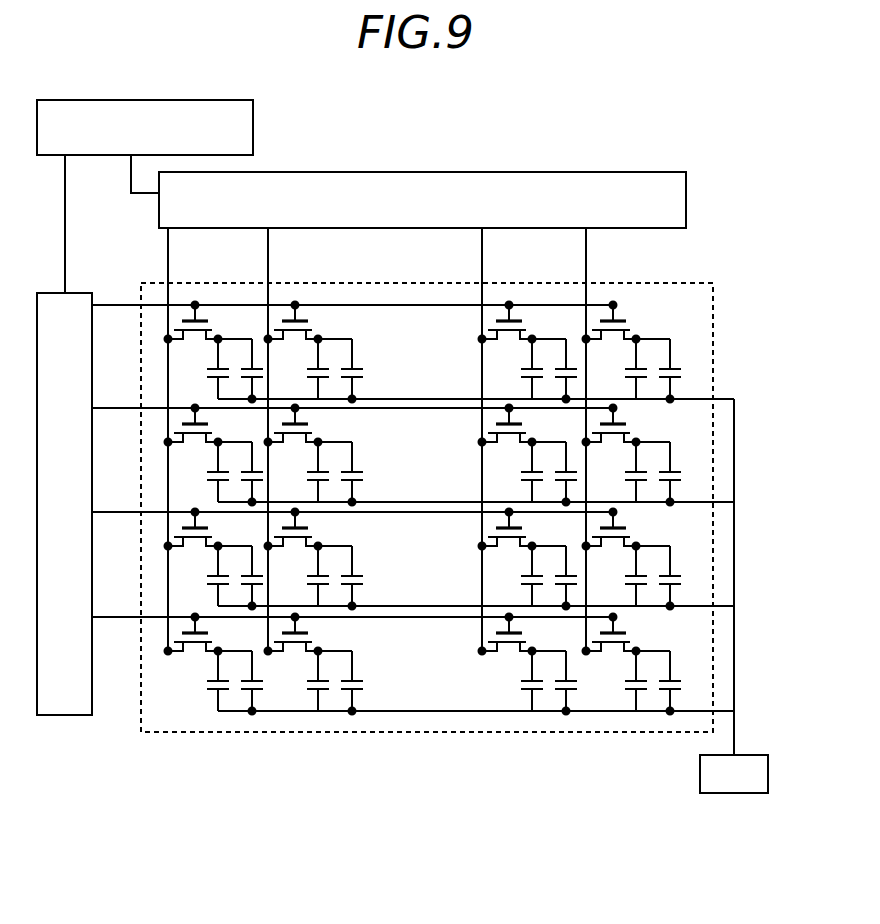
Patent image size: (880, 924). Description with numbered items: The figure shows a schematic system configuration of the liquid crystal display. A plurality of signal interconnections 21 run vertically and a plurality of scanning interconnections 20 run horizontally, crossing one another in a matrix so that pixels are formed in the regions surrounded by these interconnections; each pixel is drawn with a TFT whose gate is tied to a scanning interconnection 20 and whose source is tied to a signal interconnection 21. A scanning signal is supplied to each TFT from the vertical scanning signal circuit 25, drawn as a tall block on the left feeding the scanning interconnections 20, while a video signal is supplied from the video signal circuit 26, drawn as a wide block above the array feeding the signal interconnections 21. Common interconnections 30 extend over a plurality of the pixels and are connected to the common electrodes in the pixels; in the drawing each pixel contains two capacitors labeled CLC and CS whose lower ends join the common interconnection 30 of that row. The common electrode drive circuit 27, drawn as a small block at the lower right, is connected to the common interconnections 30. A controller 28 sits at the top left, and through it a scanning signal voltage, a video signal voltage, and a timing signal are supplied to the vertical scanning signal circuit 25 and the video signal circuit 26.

The scanning interconnections 20 is at (105, 617).
The signal interconnections 21 is at (586, 267).
The vertical scanning signal circuit 25 is at (55, 715).
The video signal circuit 26 is at (686, 197).
The common electrode drive circuit 27 is at (755, 755).
The controller 28 is at (253, 131).
The common interconnections 30 is at (698, 399).
The liquid crystal capacitor CLC is at (325, 467).
The storage capacitor CS is at (370, 475).